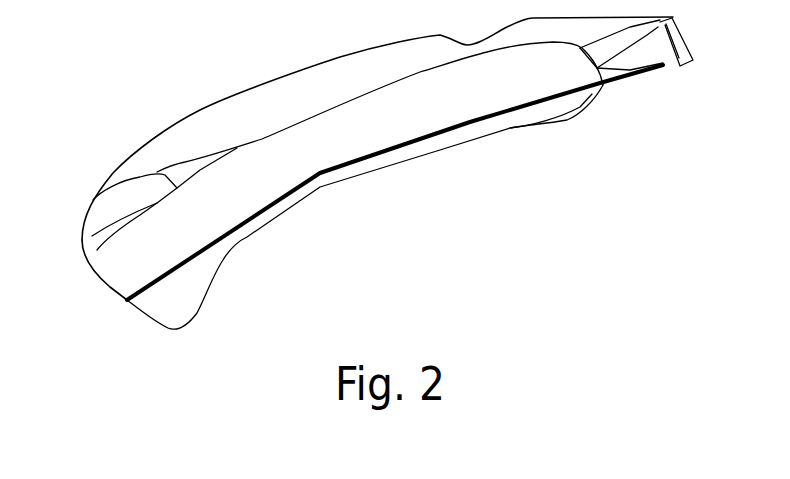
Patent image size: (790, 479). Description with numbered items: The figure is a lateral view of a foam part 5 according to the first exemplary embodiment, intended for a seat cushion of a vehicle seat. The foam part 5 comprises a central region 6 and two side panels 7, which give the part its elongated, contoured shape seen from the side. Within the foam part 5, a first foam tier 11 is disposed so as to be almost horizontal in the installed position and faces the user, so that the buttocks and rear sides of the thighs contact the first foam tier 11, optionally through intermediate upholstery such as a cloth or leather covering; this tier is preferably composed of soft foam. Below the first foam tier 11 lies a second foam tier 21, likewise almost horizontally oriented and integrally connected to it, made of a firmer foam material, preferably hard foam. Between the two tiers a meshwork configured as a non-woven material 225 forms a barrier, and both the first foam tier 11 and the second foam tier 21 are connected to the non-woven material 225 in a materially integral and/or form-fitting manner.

The foam part 5 is at (363, 183).
The central region 6 is at (126, 200).
The side panels 7 is at (256, 118).
The first foam tier 11 is at (457, 97).
The second foam tier 21 is at (347, 171).
The non-woven material 225 is at (203, 254).